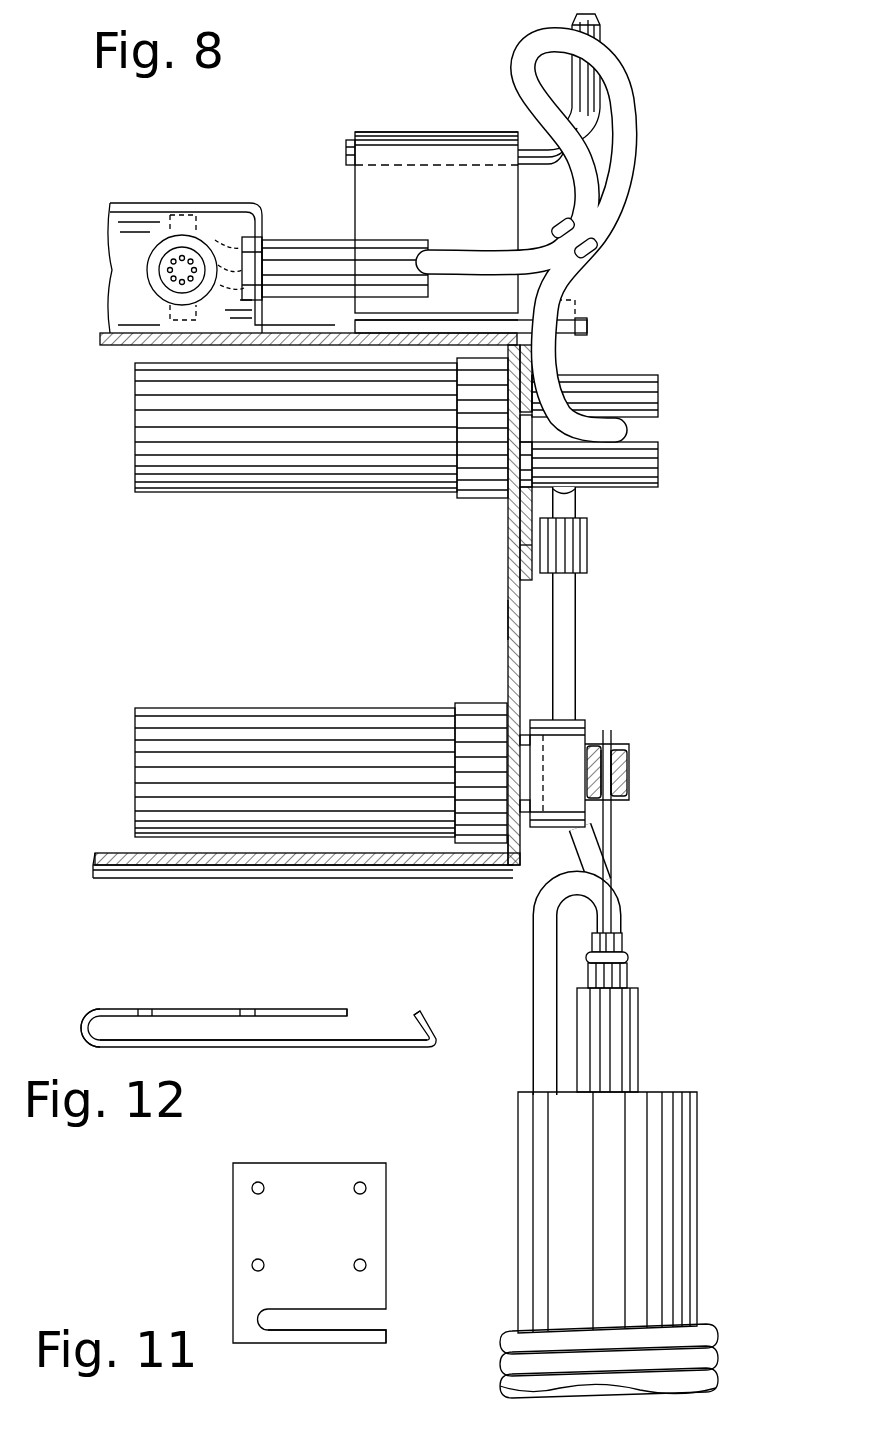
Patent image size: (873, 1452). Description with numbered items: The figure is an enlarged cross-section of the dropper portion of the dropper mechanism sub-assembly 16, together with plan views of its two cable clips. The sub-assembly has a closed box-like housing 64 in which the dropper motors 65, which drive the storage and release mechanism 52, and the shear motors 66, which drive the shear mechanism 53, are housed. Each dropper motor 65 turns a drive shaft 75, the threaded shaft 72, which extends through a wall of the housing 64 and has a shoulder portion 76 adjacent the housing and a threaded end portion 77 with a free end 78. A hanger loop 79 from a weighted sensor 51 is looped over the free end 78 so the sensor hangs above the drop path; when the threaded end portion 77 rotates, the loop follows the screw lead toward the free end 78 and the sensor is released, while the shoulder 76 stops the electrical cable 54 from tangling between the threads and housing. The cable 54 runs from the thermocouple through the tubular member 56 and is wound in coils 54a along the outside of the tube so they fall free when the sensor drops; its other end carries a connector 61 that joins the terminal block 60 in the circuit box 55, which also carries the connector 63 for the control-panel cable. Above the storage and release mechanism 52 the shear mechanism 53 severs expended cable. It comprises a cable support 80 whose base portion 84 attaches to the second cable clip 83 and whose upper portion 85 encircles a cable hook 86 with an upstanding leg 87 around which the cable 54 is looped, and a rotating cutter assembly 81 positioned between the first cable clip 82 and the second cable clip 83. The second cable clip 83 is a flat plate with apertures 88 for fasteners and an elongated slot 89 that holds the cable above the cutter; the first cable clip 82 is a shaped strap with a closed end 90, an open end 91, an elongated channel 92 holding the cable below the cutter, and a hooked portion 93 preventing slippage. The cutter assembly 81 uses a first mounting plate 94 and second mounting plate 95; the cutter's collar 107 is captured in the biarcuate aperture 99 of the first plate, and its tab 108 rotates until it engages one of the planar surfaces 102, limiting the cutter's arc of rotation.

In FIG. 8, the dropper mechanism sub-assembly 16 is at (703, 199).
In FIG. 8, the weighted sensor 51 is at (703, 1073).
In FIG. 8, the storage and release mechanism 52 is at (637, 787).
In FIG. 8, the shear mechanism 53 is at (673, 447).
In FIG. 8, the electrical cable 54 is at (628, 135).
In FIG. 8, the electrical cable coils 54a is at (643, 1333).
In FIG. 8, the circuit box 55 is at (143, 205).
In FIG. 8, the tubular member 56 is at (680, 1157).
In FIG. 8, the terminal block 60 is at (190, 207).
In FIG. 8, the connector 61 is at (278, 243).
In FIG. 8, the connector 63 is at (172, 280).
In FIG. 8, the housing 64 is at (515, 640).
In FIG. 8, the dropper motor 65 is at (310, 722).
In FIG. 8, the shear motor 66 is at (240, 472).
In FIG. 8, the threaded shaft 72 is at (600, 742).
In FIG. 8, the drive shaft 75 is at (518, 842).
In FIG. 8, the shoulder portion 76 is at (538, 722).
In FIG. 8, the threaded end portion 77 is at (612, 750).
In FIG. 8, the free end 78 is at (628, 770).
In FIG. 8, the hanger loop 79 is at (612, 838).
In FIG. 8, the cable support 80 is at (377, 124).
In FIG. 8, the rotating cutter assembly 81 is at (652, 372).
In FIG. 8, the first cable clip 82 is at (590, 552).
In FIG. 12, the first cable clip 82 is at (125, 1008).
In FIG. 8, the second cable clip 83 is at (592, 328).
In FIG. 11, the second cable clip 83 is at (322, 1168).
In FIG. 8, the base portion 84 is at (433, 312).
In FIG. 8, the upper portion 85 is at (440, 132).
In FIG. 8, the cable hook 86 is at (352, 147).
In FIG. 8, the upstanding leg 87 is at (593, 47).
In FIG. 11, the apertures 88 is at (255, 1192).
In FIG. 8, the elongated slot 89 is at (560, 303).
In FIG. 11, the elongated slot 89 is at (337, 1318).
In FIG. 12, the closed end 90 is at (88, 1030).
In FIG. 12, the open end 91 is at (370, 1016).
In FIG. 12, the elongated channel 92 is at (235, 1028).
In FIG. 12, the hooked portion 93 is at (430, 1022).
In FIG. 8, the first mounting plate 94 is at (520, 555).
In FIG. 8, the second mounting plate 95 is at (510, 620).
In FIG. 8, the biarcuate aperture 99 is at (675, 515).
In FIG. 8, the planar surfaces 102 is at (532, 400).
In FIG. 8, the collar 107 is at (520, 468).
In FIG. 8, the tab 108 is at (520, 428).